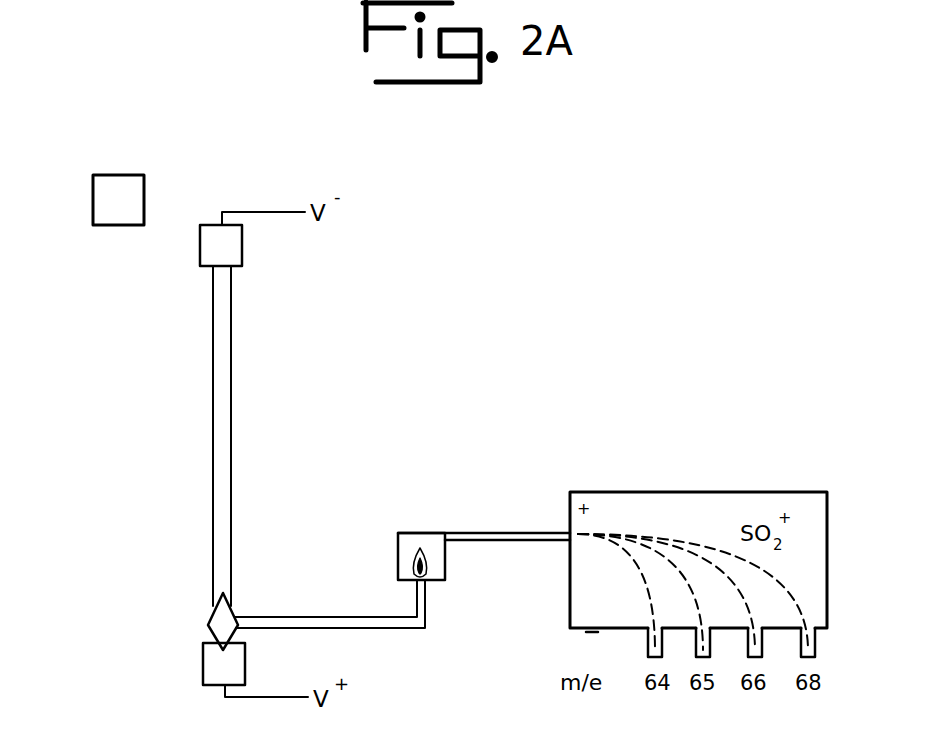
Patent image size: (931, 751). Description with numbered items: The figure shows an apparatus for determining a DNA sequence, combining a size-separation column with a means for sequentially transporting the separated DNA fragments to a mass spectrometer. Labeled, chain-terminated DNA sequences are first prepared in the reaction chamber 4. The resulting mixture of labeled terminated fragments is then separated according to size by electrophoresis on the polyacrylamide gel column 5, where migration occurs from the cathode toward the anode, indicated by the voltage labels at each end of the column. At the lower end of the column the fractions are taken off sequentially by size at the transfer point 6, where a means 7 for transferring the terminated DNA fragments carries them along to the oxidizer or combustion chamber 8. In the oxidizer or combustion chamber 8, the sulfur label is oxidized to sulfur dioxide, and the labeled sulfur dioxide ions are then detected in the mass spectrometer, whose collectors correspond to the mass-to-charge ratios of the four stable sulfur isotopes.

The reaction chamber 4 is at (120, 212).
The polyacrylamide gel column 5 is at (218, 418).
The transfer point 6 is at (223, 628).
The means for transferring 7 is at (373, 628).
The oxidizer or combustion chamber 8 is at (433, 560).